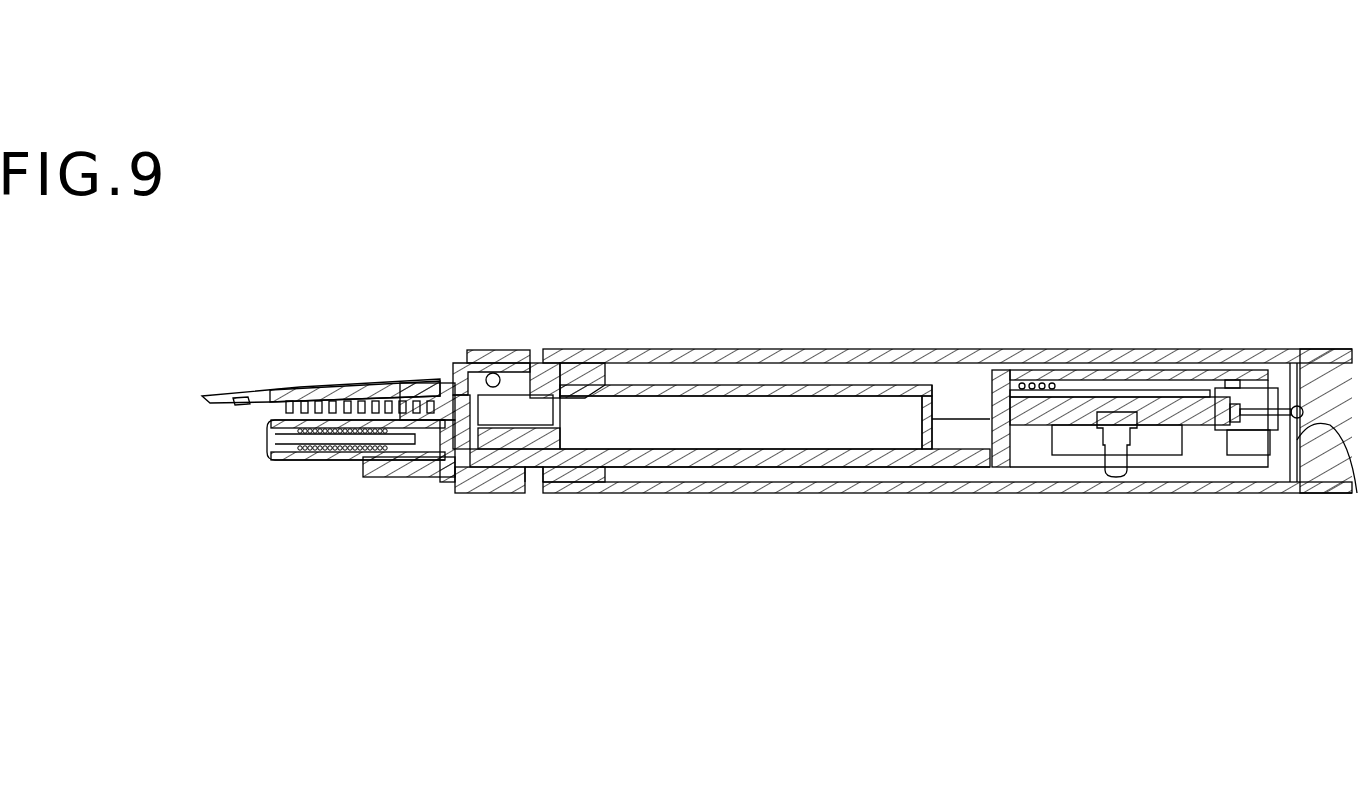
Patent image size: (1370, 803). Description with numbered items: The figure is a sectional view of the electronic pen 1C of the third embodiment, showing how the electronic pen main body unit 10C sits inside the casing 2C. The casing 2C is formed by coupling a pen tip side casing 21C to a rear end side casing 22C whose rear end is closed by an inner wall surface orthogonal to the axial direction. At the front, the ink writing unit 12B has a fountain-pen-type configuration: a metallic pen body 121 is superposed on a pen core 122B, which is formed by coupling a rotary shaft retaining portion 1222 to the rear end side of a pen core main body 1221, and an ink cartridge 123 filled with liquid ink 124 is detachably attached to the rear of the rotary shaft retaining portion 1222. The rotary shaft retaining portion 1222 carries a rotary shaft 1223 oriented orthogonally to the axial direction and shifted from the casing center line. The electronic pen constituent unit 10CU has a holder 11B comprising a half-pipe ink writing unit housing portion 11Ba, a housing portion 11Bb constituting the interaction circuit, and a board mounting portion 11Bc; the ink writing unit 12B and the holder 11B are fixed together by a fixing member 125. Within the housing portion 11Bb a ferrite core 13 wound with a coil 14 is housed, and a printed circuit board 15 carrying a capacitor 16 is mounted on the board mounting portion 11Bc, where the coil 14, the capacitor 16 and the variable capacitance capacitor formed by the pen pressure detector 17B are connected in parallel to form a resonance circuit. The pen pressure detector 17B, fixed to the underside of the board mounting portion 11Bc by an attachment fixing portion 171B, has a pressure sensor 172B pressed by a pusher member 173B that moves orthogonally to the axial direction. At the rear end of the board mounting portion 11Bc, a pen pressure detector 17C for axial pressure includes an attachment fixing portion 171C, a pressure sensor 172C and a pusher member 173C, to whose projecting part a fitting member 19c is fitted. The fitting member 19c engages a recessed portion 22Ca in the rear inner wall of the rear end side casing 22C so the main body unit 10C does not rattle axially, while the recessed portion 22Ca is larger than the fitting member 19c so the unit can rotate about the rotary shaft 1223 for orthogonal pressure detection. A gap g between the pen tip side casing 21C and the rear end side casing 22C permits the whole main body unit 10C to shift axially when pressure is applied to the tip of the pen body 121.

The electronic pen 1C is at (910, 282).
The electronic pen main body unit 10C is at (1034, 312).
The electronic pen constituent unit 10CU is at (852, 468).
The holder 11B is at (640, 464).
The ink writing unit housing portion 11Ba is at (948, 450).
The housing portion 11Bb is at (342, 458).
The board mounting portion 11Bc is at (1040, 462).
The ink writing unit 12B is at (608, 260).
The pen body 121 is at (332, 386).
The pen core 122B is at (523, 312).
The pen core main body 1221 is at (411, 381).
The rotary shaft retaining portion 1222 is at (480, 372).
The rotary shaft 1223 is at (462, 395).
The ink cartridge 123 is at (563, 365).
The liquid ink 124 is at (722, 435).
The fixing member 125 is at (415, 477).
The ferrite core 13 is at (270, 441).
The coil 14 is at (303, 447).
The printed circuit board 15 is at (1098, 397).
The capacitor 16 is at (1052, 387).
The pen pressure detector 17B is at (1267, 540).
The attachment fixing portion 171B is at (1170, 453).
The pressure sensor 172B is at (1093, 418).
The pusher member 173B is at (1117, 468).
The pen pressure detector 17C is at (1352, 290).
The attachment fixing portion 171C is at (1222, 388).
The pressure sensor 172C is at (1233, 385).
The pusher member 173C is at (1292, 365).
The fitting member 19c is at (1293, 418).
The casing 2C is at (603, 553).
The pen tip side casing 21C is at (493, 494).
The rear end side casing 22C is at (557, 488).
The recessed portion 22Ca is at (1337, 494).
The gap g is at (540, 494).